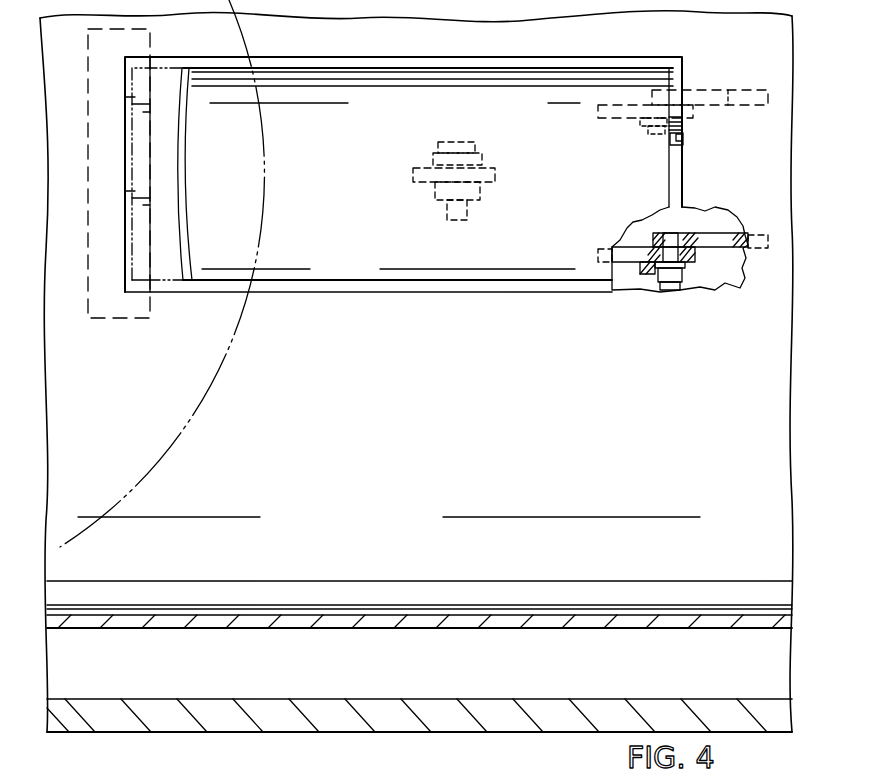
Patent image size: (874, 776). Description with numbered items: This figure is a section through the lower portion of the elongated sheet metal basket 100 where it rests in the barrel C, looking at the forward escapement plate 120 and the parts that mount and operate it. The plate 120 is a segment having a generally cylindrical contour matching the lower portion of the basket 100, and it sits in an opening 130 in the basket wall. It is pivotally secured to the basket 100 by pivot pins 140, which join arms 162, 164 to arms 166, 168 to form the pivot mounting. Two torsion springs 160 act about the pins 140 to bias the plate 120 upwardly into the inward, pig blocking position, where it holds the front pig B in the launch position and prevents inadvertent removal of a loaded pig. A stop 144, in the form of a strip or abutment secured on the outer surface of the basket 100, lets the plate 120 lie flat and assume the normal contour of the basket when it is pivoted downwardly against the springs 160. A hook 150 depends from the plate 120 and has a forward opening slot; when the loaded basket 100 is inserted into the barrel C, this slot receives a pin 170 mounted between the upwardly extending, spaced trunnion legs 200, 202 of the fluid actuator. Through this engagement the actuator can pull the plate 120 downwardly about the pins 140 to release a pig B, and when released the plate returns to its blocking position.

The basket 100 is at (277, 630).
The escapement plate 120 is at (368, 253).
The opening 130 is at (417, 288).
The pivot pins 140 is at (677, 287).
The stop 144 is at (143, 161).
The hook 150 is at (497, 172).
The torsion springs 160 is at (660, 268).
The arm 162 is at (622, 256).
The arm 164 is at (620, 105).
The arm 166 is at (738, 258).
The arm 168 is at (712, 98).
The pin 170 is at (468, 160).
The trunnion leg 200 is at (482, 195).
The trunnion leg 202 is at (440, 153).
The pig B is at (262, 240).
The barrel C is at (517, 732).